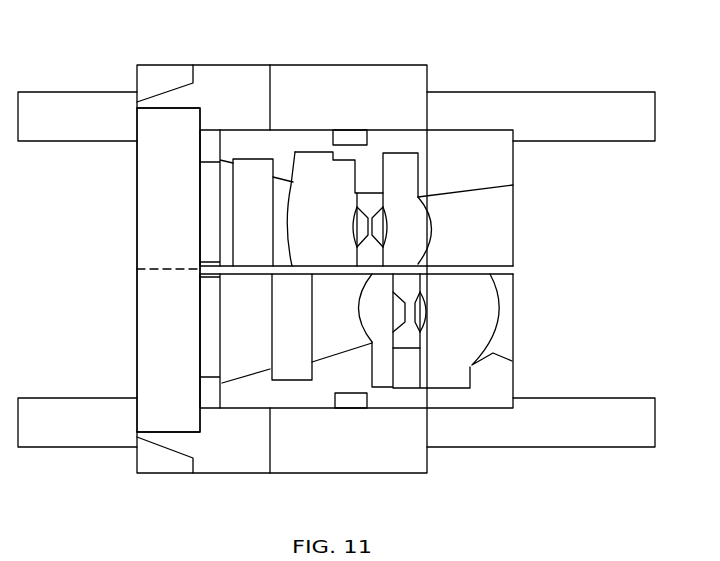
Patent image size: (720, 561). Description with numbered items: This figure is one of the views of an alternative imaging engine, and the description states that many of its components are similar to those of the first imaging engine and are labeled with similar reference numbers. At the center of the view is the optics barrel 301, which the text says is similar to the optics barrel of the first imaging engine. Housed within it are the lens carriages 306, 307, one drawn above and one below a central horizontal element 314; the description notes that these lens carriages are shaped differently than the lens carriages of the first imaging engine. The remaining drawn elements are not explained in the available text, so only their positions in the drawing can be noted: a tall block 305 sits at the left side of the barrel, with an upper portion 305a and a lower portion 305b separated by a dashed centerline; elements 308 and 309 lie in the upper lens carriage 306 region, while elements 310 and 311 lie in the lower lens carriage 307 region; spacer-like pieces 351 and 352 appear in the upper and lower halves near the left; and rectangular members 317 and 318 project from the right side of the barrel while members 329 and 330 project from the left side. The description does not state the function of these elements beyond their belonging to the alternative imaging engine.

The optics barrel 301 is at (318, 85).
The lens barrel block 305 is at (137, 258).
The upper lens portion 305a is at (157, 215).
The lower lens portion 305b is at (163, 331).
The lens carriage 306 is at (478, 164).
The lens carriage 307 is at (493, 380).
The upper gimbal lens 308 is at (413, 233).
The upper actuator block 309 is at (313, 177).
The lower lens 310 is at (470, 315).
The lower actuator arm 311 is at (383, 382).
The center plate 314 is at (503, 268).
The right upper mount 317 is at (597, 107).
The right lower mount 318 is at (588, 417).
The left upper mount 329 is at (78, 108).
The left lower mount 330 is at (70, 412).
The upper spacer 351 is at (253, 193).
The lower spacer 352 is at (287, 362).